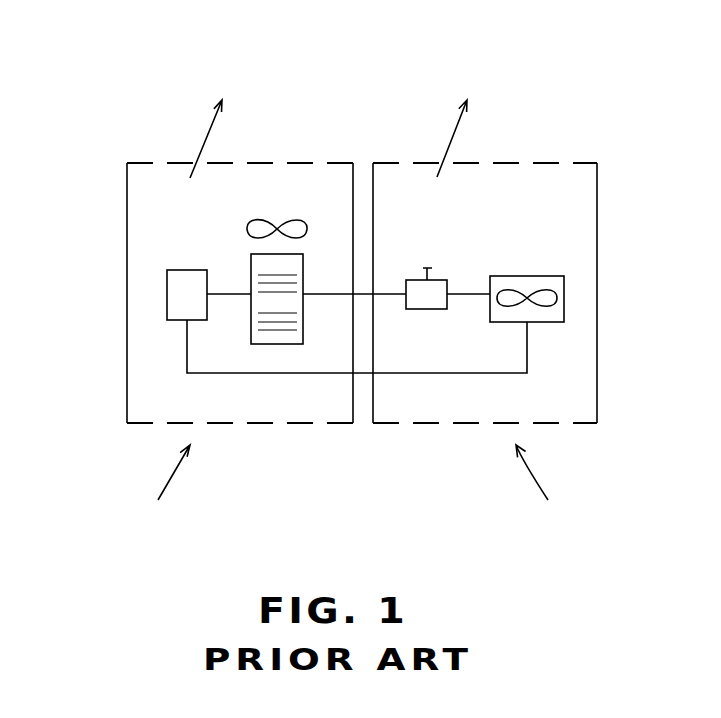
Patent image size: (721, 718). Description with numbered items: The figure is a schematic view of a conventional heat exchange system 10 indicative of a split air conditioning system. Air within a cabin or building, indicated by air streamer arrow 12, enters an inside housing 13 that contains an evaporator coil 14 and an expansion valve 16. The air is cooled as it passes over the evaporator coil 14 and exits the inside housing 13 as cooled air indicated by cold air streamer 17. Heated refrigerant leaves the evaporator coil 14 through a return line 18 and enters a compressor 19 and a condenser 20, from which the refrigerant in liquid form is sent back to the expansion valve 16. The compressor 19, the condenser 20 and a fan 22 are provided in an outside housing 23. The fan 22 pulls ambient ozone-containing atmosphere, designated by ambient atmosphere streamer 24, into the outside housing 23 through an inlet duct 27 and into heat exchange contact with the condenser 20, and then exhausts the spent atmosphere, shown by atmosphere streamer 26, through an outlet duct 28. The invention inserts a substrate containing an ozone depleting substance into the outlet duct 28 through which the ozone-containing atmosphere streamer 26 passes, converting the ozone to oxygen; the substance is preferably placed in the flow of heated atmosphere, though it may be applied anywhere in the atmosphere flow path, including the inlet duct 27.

The heat exchange system 10 is at (560, 113).
The air streamer arrow 12 is at (538, 483).
The inside housing 13 is at (597, 336).
The evaporator coil 14 is at (512, 276).
The expansion valve 16 is at (437, 278).
The cold air streamer 17 is at (443, 143).
The return line 18 is at (425, 373).
The compressor 19 is at (192, 270).
The condenser 20 is at (303, 265).
The fan 22 is at (275, 227).
The outside housing 23 is at (127, 292).
The ambient atmosphere streamer 24 is at (175, 490).
The atmosphere streamer 26 is at (198, 142).
The inlet duct 27 is at (289, 425).
The outlet duct 28 is at (265, 163).